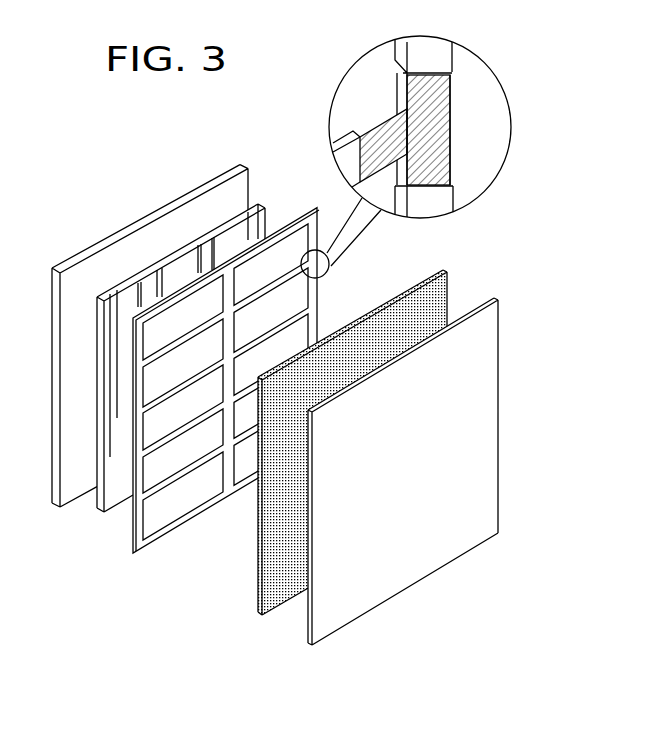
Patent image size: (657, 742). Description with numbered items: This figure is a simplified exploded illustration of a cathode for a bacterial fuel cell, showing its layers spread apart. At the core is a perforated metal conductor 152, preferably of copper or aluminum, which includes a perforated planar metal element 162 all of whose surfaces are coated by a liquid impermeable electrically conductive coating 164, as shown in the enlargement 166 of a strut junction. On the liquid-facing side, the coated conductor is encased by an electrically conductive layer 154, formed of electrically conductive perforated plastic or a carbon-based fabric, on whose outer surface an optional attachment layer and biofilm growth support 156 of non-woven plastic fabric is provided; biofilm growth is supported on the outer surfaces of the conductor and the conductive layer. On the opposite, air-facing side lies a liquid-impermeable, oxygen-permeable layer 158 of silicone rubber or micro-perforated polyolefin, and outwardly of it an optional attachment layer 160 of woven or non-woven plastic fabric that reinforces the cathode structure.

The perforated metal conductor 152 is at (139, 527).
The electrically conductive layer 154 is at (276, 535).
The attachment layer and biofilm growth support 156 is at (348, 604).
The liquid-impermeable, oxygen-permeable layer 158 is at (102, 488).
The attachment layer 160 is at (72, 415).
The perforated planar metal element 162 is at (393, 108).
The liquid impermeable electrically conductive coating 164 is at (428, 206).
The enlargement 166 is at (483, 60).